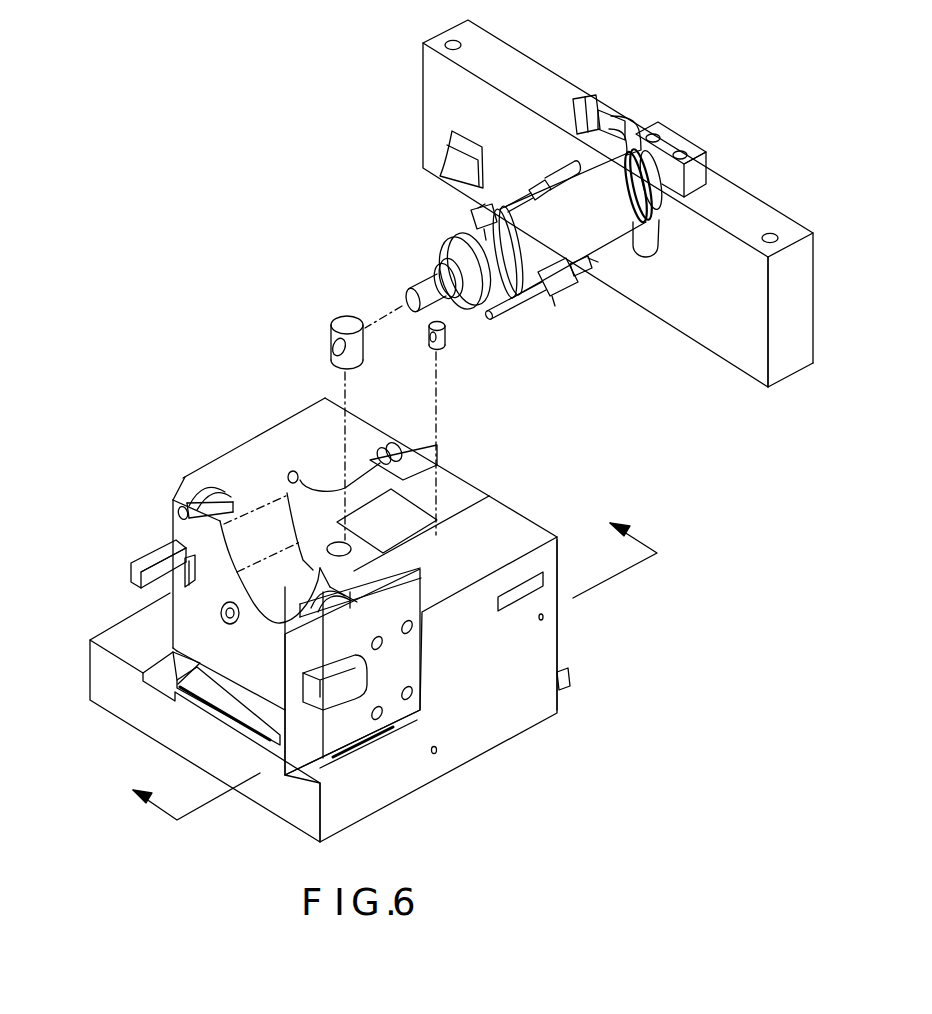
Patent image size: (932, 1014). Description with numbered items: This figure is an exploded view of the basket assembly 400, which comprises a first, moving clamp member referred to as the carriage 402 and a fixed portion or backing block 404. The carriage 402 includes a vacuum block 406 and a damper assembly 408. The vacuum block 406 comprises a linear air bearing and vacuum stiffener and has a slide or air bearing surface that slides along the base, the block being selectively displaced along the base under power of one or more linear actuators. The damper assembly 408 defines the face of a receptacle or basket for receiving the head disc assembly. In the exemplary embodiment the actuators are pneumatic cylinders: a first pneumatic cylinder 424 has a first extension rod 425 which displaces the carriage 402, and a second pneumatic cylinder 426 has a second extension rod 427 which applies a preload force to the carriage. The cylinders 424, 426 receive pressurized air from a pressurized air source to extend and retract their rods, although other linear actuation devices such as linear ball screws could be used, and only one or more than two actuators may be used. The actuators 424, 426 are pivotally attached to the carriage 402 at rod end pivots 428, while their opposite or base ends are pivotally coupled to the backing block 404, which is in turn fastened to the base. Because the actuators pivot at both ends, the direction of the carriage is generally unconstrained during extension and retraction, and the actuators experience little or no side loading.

The basket assembly 400 is at (248, 254).
The carriage 402 is at (198, 459).
The backing block 404 is at (776, 197).
The vacuum block 406 is at (560, 637).
The damper assembly 408 is at (178, 521).
The first pneumatic cylinder 424 is at (605, 238).
The first extension rod 425 is at (490, 307).
The second pneumatic cylinder 426 is at (457, 237).
The second extension rod 427 is at (420, 280).
The rod end pivots 428 is at (325, 337).